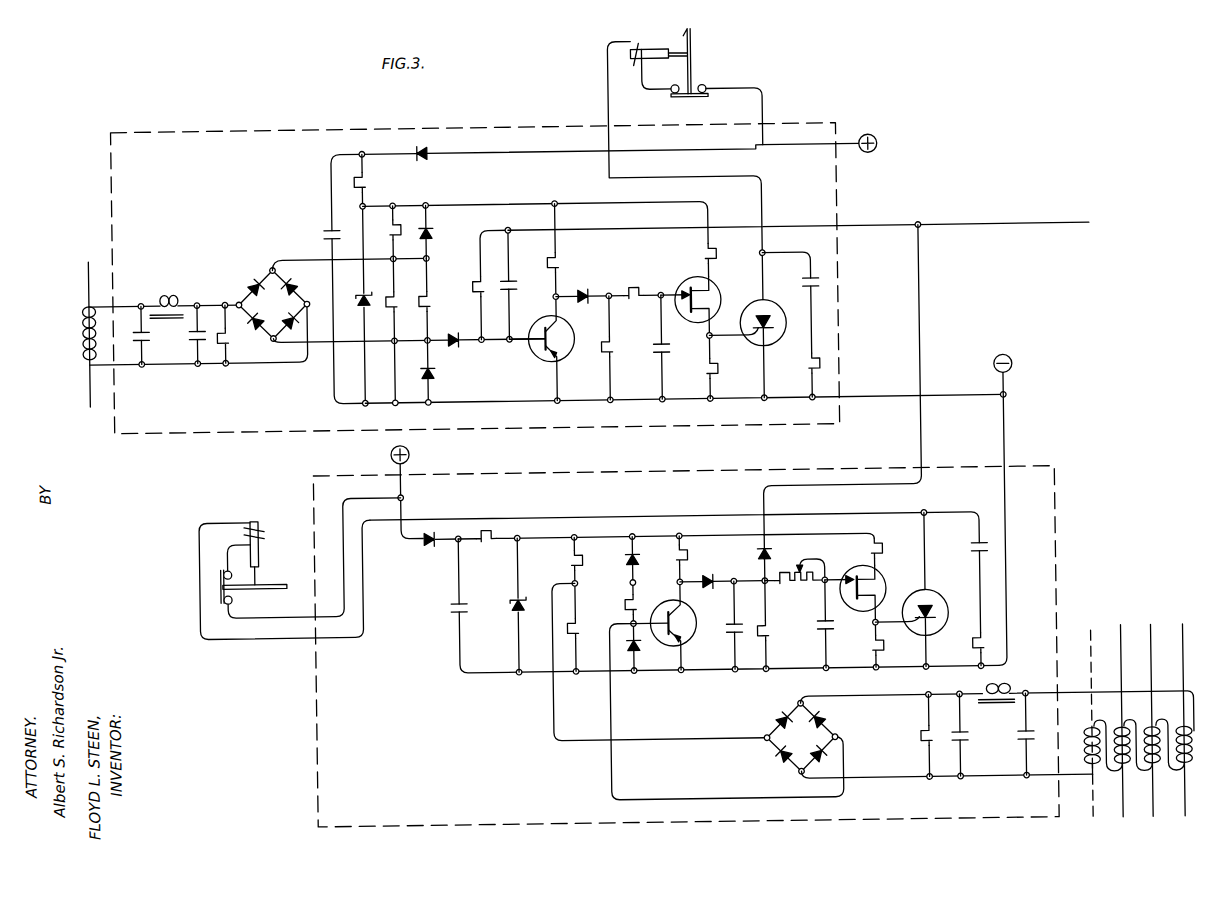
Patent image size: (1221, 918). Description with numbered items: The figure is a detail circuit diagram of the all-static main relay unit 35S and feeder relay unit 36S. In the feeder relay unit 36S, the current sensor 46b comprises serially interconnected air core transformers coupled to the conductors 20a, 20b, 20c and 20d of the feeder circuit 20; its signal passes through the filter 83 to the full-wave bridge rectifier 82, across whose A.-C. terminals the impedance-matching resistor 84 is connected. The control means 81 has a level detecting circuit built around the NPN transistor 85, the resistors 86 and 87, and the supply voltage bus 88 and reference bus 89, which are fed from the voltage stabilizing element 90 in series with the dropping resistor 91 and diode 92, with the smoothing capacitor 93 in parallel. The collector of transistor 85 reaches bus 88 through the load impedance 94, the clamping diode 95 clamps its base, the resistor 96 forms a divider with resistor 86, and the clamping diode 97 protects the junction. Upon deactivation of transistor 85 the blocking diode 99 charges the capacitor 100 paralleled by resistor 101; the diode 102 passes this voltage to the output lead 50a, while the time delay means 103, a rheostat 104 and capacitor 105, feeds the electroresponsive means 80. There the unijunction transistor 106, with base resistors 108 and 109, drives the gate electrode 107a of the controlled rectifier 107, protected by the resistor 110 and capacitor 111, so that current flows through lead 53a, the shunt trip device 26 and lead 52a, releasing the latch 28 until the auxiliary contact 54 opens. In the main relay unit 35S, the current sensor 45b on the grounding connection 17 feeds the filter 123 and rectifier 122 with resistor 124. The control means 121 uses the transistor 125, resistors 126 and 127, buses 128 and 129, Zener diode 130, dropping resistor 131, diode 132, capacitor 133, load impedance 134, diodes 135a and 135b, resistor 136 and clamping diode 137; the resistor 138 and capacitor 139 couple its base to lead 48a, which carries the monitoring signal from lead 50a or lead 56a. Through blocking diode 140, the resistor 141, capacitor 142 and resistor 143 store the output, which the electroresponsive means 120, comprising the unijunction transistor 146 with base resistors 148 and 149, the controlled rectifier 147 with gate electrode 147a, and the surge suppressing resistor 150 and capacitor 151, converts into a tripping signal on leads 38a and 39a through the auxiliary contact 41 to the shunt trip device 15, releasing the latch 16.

The shunt trip device 15 is at (671, 41).
The latch 16 is at (698, 51).
The auxiliary contact 41 is at (693, 99).
The output lead 38a is at (613, 92).
The output lead 39a is at (769, 101).
The grounding connection 17 is at (88, 261).
The current sensor 45b is at (84, 321).
The full-wave bridge rectifier 122 is at (286, 305).
The filter 123 is at (174, 340).
The impedance-matching resistor 124 is at (232, 334).
The smoothing capacitor 133 is at (327, 228).
The dropping resistor 131 is at (371, 177).
The supply voltage bus 128 is at (395, 203).
The resistor 136 is at (392, 231).
The clamping diode 137 is at (435, 233).
The voltage stabilizing element 130 is at (360, 301).
The resistor 126 is at (400, 292).
The resistor 127 is at (433, 292).
The diode 135a is at (455, 330).
The diode 135b is at (433, 372).
The reference bus 129 is at (383, 402).
The resistor 138 is at (486, 274).
The capacitor 139 is at (516, 291).
The load impedance 134 is at (565, 258).
The control means 121 is at (510, 358).
The NPN transistor 125 is at (566, 362).
The blocking diode 140 is at (585, 302).
The resistor 141 is at (636, 289).
The resistor 143 is at (614, 345).
The capacitor 142 is at (658, 357).
The unijunction transistor 146 is at (714, 289).
The base resistor 149 is at (703, 254).
The electroresponsive means 120 is at (746, 213).
The solid state controlled rectifier 147 is at (772, 349).
The gate electrode 147a is at (753, 343).
The base resistor 148 is at (718, 379).
The capacitor 151 is at (825, 276).
The resistor 150 is at (823, 366).
The interconnecting lead 48a is at (862, 228).
The lead 56a is at (1032, 222).
The output lead 50a is at (921, 428).
The diode 132 is at (428, 149).
The main relay unit 35S is at (277, 126).
The feeder relay unit 36S is at (1054, 481).
The shunt trip device 26 is at (241, 504).
The auxiliary contact 54 is at (218, 582).
The latch 28 is at (252, 586).
The output lead 52a is at (210, 634).
The output lead 53a is at (285, 613).
The supply voltage bus 88 is at (549, 512).
The diode 92 is at (424, 545).
The dropping resistor 91 is at (485, 547).
The smoothing capacitor 93 is at (449, 614).
The voltage stabilizing element 90 is at (512, 611).
The resistor 96 is at (565, 566).
The clamping diode 97 is at (625, 563).
The resistor 86 is at (580, 627).
The resistor 87 is at (640, 604).
The NPN transistor 85 is at (694, 615).
The load impedance 94 is at (684, 556).
The clamping diode 95 is at (640, 648).
The blocking diode 99 is at (711, 580).
The capacitor 100 is at (725, 639).
The rheostat 104 is at (775, 589).
The time delay means 103 is at (808, 617).
The resistor 101 is at (766, 634).
The capacitor 105 is at (832, 628).
The diode 102 is at (770, 556).
The base resistor 109 is at (866, 553).
The unijunction transistor 106 is at (878, 581).
The electroresponsive means 80 is at (906, 543).
The solid state controlled rectifier 107 is at (938, 601).
The gate electrode 107a is at (915, 632).
The resistor 108 is at (866, 652).
The resistor 110 is at (969, 649).
The capacitor 111 is at (980, 547).
The reference bus 89 is at (526, 673).
The control means 81 is at (668, 715).
The full-wave bridge rectifier 82 is at (804, 752).
The impedance-matching resistor 84 is at (916, 741).
The filter 83 is at (993, 746).
The current sensor 46b is at (1141, 728).
The feeder circuit 20 is at (1134, 708).
The phase conductor 20a is at (1180, 633).
The phase conductor 20b is at (1148, 677).
The phase conductor 20c is at (1118, 633).
The conductor 20d is at (1088, 677).